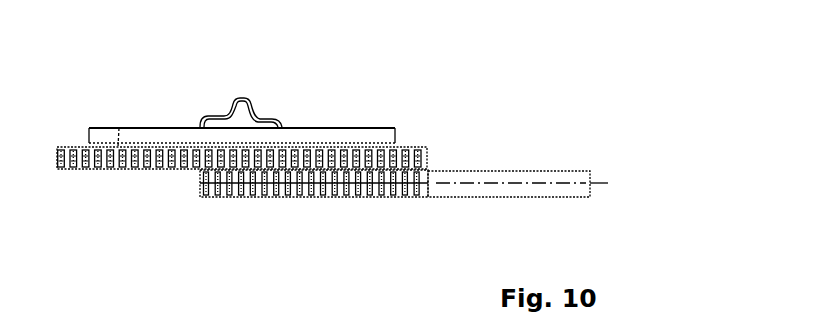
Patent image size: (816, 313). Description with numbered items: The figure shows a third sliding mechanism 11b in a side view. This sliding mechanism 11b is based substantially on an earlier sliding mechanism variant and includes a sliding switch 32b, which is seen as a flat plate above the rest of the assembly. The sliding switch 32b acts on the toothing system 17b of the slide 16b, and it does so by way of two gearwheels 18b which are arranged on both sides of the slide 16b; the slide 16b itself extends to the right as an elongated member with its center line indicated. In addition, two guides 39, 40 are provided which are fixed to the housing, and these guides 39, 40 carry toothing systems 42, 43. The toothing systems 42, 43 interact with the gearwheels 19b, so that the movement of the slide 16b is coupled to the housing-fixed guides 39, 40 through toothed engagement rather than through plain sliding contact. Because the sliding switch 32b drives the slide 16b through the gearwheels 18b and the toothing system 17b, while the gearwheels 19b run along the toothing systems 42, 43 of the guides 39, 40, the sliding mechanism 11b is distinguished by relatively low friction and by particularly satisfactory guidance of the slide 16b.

The sliding mechanism 11b is at (365, 86).
The slide 16b is at (495, 176).
The toothing system 17b is at (383, 197).
The gearwheels 18b is at (250, 194).
The gearwheels 19b is at (257, 146).
The sliding switch 32b is at (382, 122).
The guide 39 is at (242, 188).
The guide 40 is at (112, 177).
The toothing system 42 is at (134, 114).
The toothing system 43 is at (119, 128).